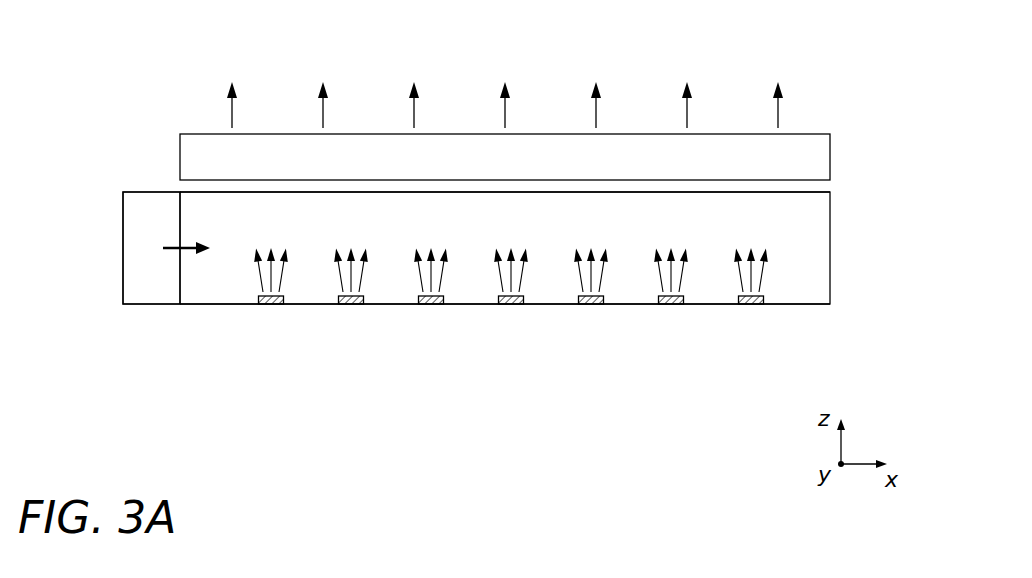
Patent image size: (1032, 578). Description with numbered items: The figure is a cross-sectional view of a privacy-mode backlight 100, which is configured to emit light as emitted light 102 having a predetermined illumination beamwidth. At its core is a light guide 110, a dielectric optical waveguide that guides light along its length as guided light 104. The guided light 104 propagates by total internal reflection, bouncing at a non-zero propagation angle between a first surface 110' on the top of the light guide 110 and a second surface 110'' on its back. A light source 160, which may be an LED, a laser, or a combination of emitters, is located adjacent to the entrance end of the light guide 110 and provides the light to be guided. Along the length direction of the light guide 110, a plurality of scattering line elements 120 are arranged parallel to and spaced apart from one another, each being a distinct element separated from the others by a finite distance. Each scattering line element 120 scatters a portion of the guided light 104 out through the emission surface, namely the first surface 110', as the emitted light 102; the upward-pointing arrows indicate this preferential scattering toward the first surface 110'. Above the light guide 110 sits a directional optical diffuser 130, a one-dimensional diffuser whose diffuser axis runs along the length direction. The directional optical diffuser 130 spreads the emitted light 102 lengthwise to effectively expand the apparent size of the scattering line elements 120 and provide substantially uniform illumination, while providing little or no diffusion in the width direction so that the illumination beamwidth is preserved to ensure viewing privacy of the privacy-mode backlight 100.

The privacy-mode backlight 100 is at (506, 204).
The emitted light 102 is at (188, 98).
The guided light 104 is at (187, 210).
The light guide 110 is at (530, 290).
The first surface 110' is at (554, 207).
The second surface 110'' is at (556, 288).
The scattering line elements 120 is at (702, 325).
The directional optical diffuser 130 is at (830, 155).
The light source 160 is at (153, 305).